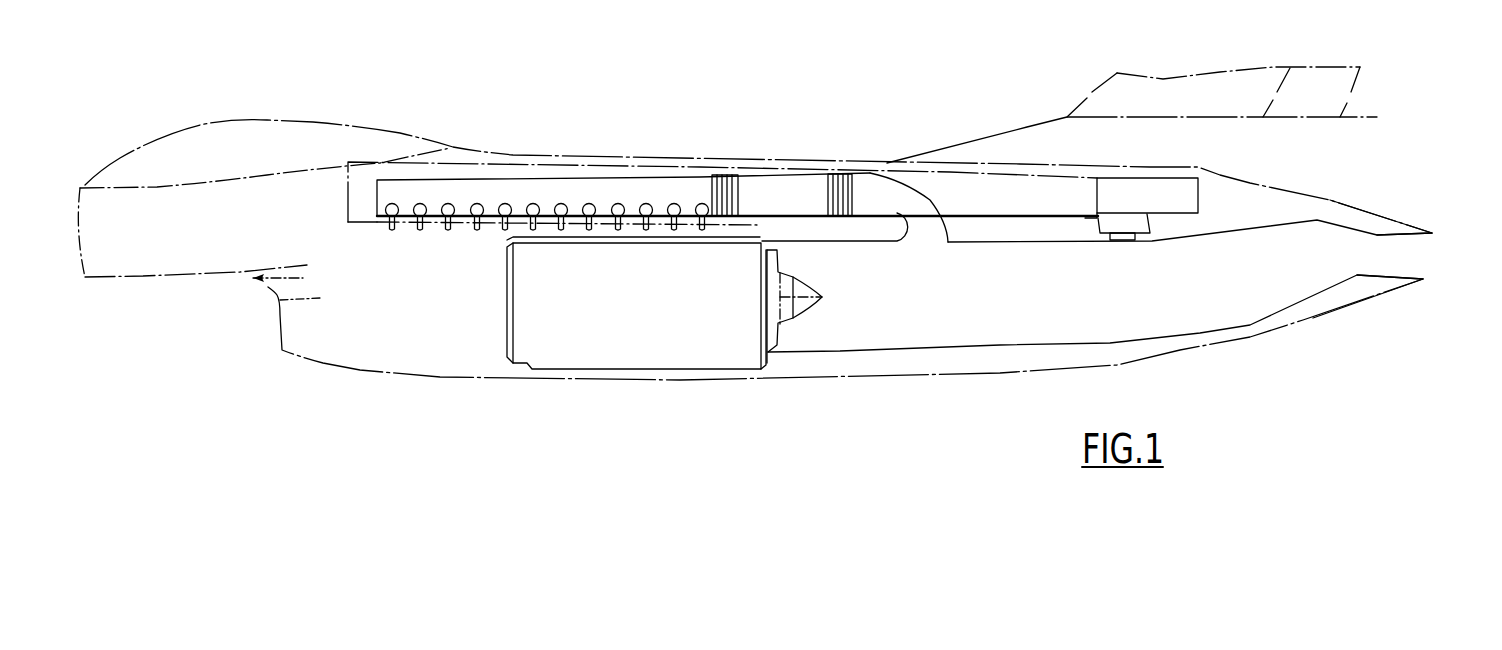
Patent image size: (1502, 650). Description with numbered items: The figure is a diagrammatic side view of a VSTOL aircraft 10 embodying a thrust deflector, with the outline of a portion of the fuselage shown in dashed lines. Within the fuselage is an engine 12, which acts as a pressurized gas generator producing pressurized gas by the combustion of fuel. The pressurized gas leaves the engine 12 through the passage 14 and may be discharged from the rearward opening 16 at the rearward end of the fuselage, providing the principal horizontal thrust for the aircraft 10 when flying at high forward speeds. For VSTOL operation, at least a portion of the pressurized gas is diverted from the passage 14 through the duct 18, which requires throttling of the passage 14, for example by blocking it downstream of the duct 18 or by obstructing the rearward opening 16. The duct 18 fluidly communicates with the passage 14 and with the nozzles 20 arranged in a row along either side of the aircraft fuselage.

The aircraft 10 is at (511, 153).
The engine 12 is at (637, 326).
The passage 14 is at (983, 326).
The rearward opening 16 is at (1407, 258).
The duct 18 is at (875, 188).
The nozzles 20 is at (433, 240).